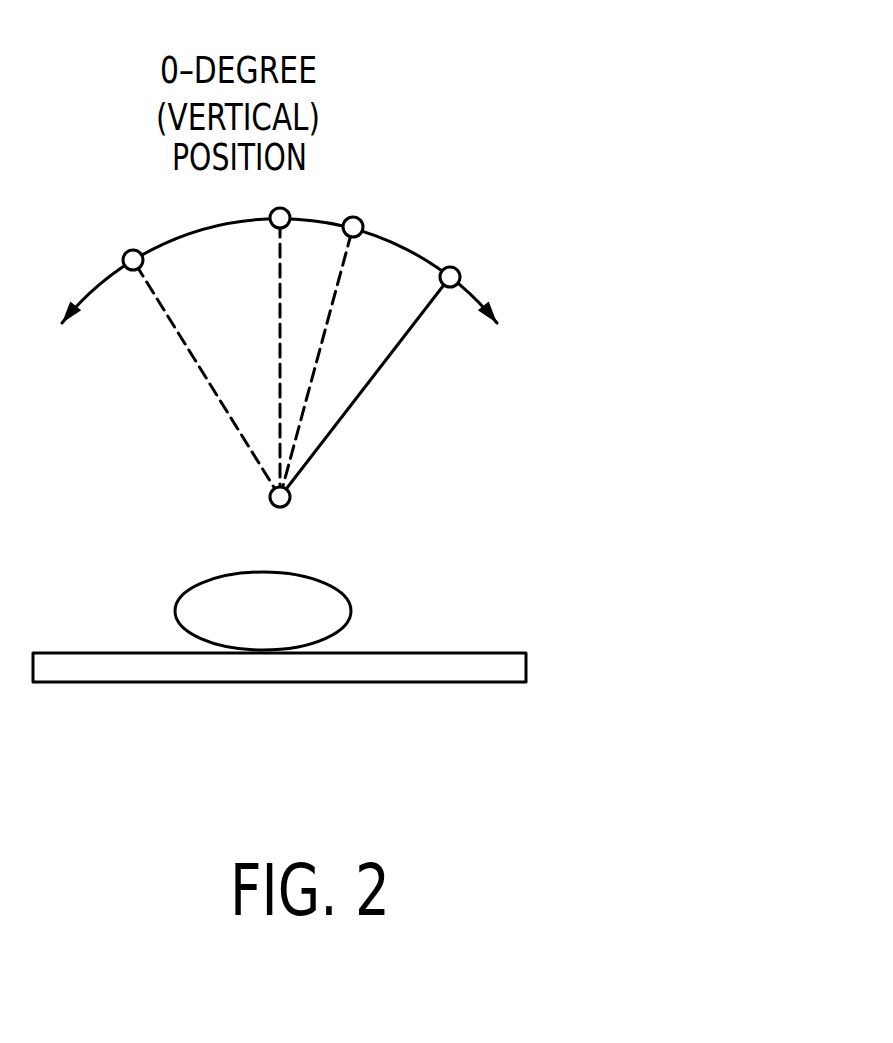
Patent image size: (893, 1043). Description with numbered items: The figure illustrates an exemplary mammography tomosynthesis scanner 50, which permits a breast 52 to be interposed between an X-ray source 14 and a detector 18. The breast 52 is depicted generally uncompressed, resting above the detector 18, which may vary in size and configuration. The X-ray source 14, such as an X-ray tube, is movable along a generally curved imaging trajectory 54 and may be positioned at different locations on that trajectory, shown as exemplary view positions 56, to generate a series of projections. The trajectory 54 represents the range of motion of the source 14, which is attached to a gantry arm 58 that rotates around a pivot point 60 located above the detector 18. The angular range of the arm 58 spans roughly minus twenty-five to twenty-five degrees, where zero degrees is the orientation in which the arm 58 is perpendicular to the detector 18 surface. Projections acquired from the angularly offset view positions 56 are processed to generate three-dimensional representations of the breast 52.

The mammography tomosynthesis scanner 50 is at (513, 107).
The imaging trajectory 54 is at (97, 285).
The X-ray source 14 is at (382, 220).
The view positions 56 is at (129, 251).
The gantry arm 58 is at (367, 385).
The pivot point 60 is at (289, 505).
The breast 52 is at (352, 608).
The detector 18 is at (328, 683).